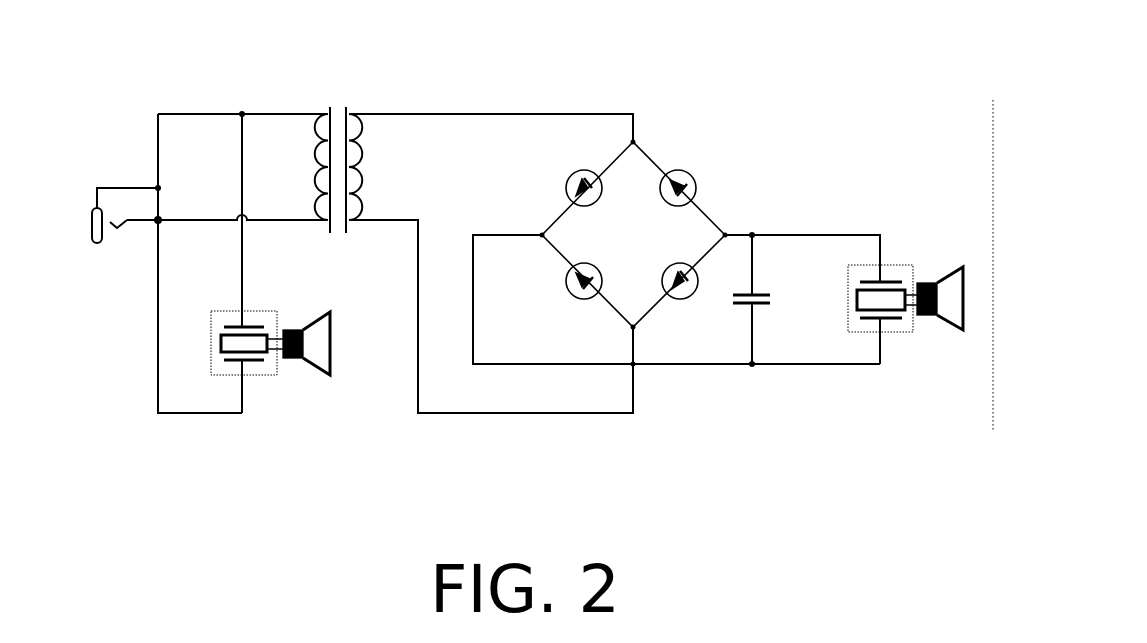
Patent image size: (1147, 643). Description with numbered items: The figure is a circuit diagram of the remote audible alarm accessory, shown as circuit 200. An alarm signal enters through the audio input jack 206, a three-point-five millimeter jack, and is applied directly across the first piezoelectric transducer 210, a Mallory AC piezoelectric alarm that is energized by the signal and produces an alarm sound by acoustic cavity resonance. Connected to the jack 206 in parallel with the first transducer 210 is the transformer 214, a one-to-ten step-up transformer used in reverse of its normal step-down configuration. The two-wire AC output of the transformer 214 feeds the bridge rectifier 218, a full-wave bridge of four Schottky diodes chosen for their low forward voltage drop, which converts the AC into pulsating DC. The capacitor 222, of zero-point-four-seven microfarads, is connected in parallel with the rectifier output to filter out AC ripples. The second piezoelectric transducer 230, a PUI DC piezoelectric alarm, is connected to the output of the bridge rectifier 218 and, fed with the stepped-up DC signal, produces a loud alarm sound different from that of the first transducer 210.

The circuit 200 is at (838, 53).
The audio input jack 206 is at (123, 357).
The first piezoelectric transducer 210 is at (283, 430).
The transformer 214 is at (337, 88).
The bridge rectifier 218 is at (676, 147).
The capacitor 222 is at (730, 320).
The second piezoelectric transducer 230 is at (927, 258).